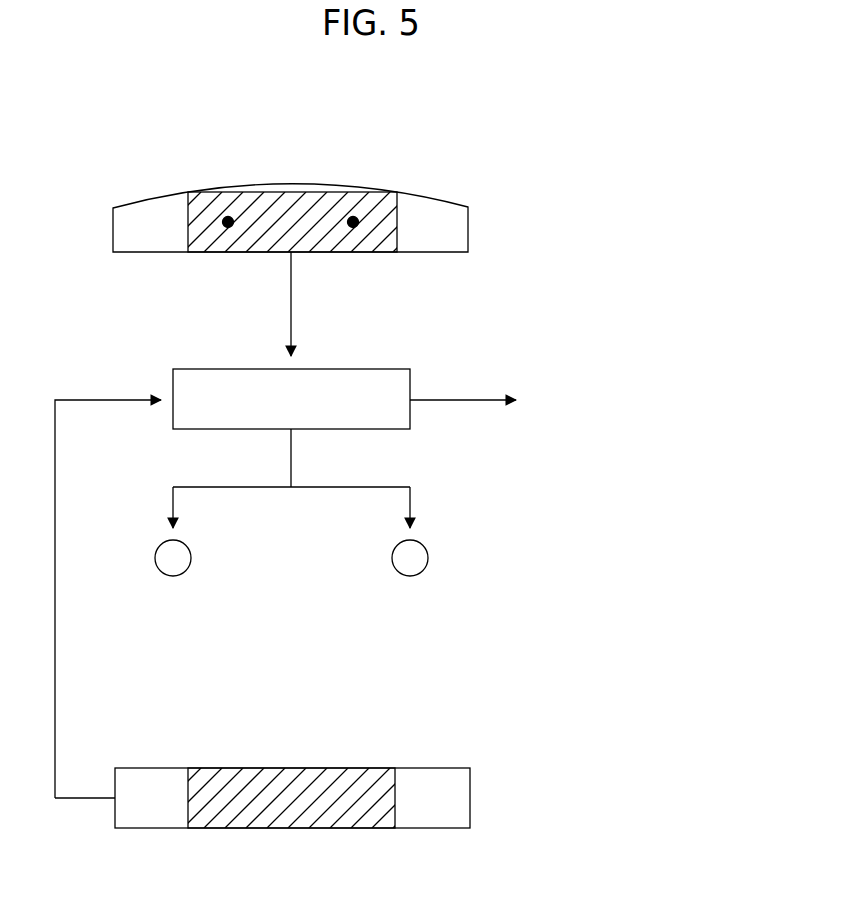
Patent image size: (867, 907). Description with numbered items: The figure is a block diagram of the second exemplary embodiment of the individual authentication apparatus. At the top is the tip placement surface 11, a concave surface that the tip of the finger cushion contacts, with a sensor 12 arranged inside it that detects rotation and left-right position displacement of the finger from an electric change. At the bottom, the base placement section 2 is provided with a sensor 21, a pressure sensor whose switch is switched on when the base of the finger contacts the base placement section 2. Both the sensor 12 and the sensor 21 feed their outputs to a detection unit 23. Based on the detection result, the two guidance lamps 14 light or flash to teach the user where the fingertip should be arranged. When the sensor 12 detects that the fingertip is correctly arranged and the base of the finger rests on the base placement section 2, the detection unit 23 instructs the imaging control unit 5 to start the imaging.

The tip placement surface 11 is at (457, 202).
The sensor 12 is at (293, 224).
The detection unit 23 is at (291, 399).
The imaging control unit 5 is at (564, 399).
The guidance lamp 14 is at (191, 550).
The base placement section 2 is at (470, 768).
The sensor 21 is at (295, 830).